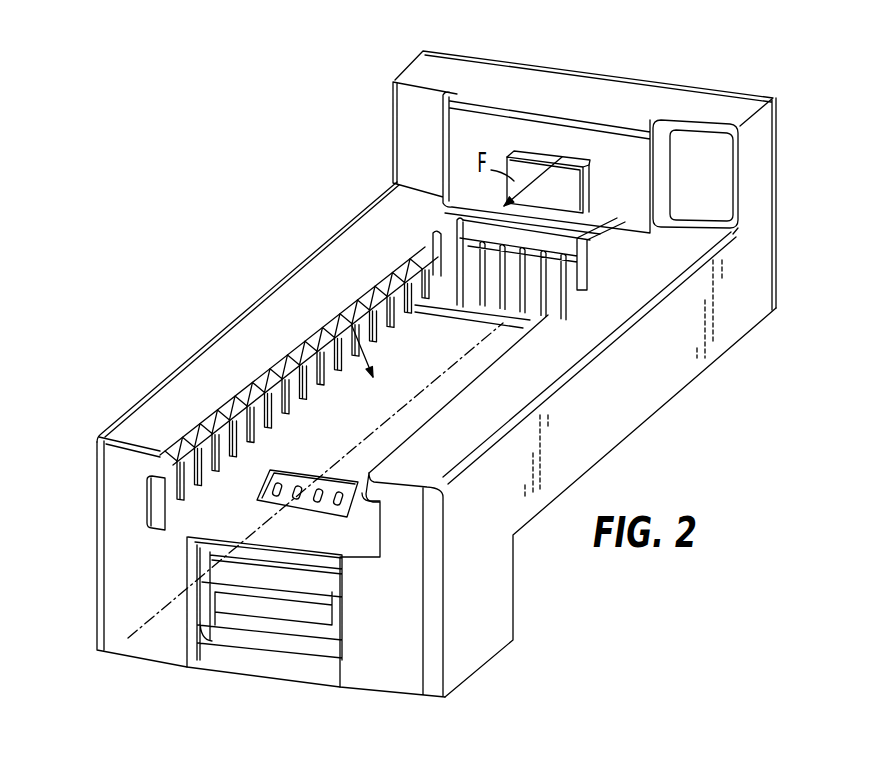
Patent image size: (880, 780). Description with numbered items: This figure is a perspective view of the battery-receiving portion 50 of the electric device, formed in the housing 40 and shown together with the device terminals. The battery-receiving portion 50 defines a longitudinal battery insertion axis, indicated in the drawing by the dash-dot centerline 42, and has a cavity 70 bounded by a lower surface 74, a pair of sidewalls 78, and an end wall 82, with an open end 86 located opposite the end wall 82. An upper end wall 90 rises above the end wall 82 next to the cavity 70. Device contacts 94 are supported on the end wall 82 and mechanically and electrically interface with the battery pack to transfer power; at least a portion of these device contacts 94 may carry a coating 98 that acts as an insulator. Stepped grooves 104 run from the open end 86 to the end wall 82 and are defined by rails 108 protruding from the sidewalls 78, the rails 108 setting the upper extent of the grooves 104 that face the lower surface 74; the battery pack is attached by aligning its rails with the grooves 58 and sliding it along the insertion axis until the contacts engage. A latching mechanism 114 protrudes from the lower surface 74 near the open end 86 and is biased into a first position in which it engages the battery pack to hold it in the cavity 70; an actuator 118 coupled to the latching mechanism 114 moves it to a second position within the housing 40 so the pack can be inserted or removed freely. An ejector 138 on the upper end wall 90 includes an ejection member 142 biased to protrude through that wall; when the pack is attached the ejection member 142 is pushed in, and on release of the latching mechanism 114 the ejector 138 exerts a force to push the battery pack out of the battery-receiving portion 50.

The housing 40 is at (417, 110).
The central axis 42 is at (163, 614).
The battery-receiving portion 50 is at (660, 423).
The grooves 58 is at (157, 474).
The cavity 70 is at (333, 323).
The lower surface 74 is at (285, 362).
The sidewalls 78 is at (377, 283).
The end wall 82 is at (567, 228).
The open end 86 is at (197, 507).
The upper end wall 90 is at (627, 153).
The device contacts 94 is at (432, 238).
The coating 98 is at (374, 494).
The stepped grooves 104 is at (398, 273).
The rails 108 is at (255, 393).
The latching mechanism 114 is at (323, 507).
The actuator 118 is at (300, 660).
The ejector 138 is at (533, 157).
The ejection member 142 is at (570, 177).